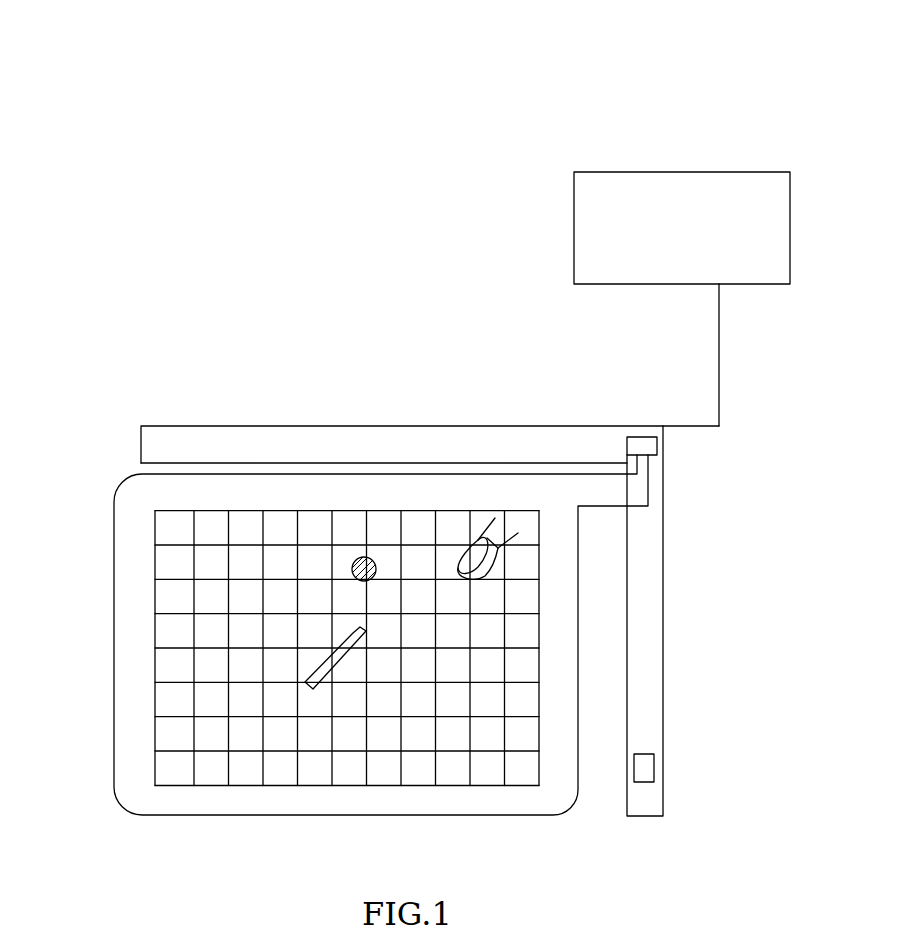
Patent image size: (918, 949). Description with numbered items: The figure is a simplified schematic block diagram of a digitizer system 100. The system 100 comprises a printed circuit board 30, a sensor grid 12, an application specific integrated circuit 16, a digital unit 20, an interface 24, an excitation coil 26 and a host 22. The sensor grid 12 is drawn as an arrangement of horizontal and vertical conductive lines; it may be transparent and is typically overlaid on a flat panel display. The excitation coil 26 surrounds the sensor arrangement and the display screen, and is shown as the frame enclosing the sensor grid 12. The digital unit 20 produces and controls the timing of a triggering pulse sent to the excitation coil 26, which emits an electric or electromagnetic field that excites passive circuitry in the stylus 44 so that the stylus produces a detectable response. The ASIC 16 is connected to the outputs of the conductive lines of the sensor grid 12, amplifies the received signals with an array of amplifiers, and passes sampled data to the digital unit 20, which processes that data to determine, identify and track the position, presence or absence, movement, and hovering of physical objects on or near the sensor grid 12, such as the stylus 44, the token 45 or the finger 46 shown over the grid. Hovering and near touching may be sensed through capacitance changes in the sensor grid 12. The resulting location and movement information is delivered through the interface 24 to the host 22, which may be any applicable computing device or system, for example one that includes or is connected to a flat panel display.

The digitizer system 100 is at (270, 85).
The sensor grid 12 is at (171, 732).
The application specific integrated circuit (ASIC) 16 is at (656, 766).
The digital unit 20 is at (658, 445).
The host 22 is at (729, 172).
The interface 24 is at (719, 350).
The excitation coil 26 is at (115, 770).
The printed circuit board (PCB) 30 is at (517, 426).
The stylus 44 is at (323, 658).
The token 45 is at (352, 564).
The finger 46 is at (498, 550).